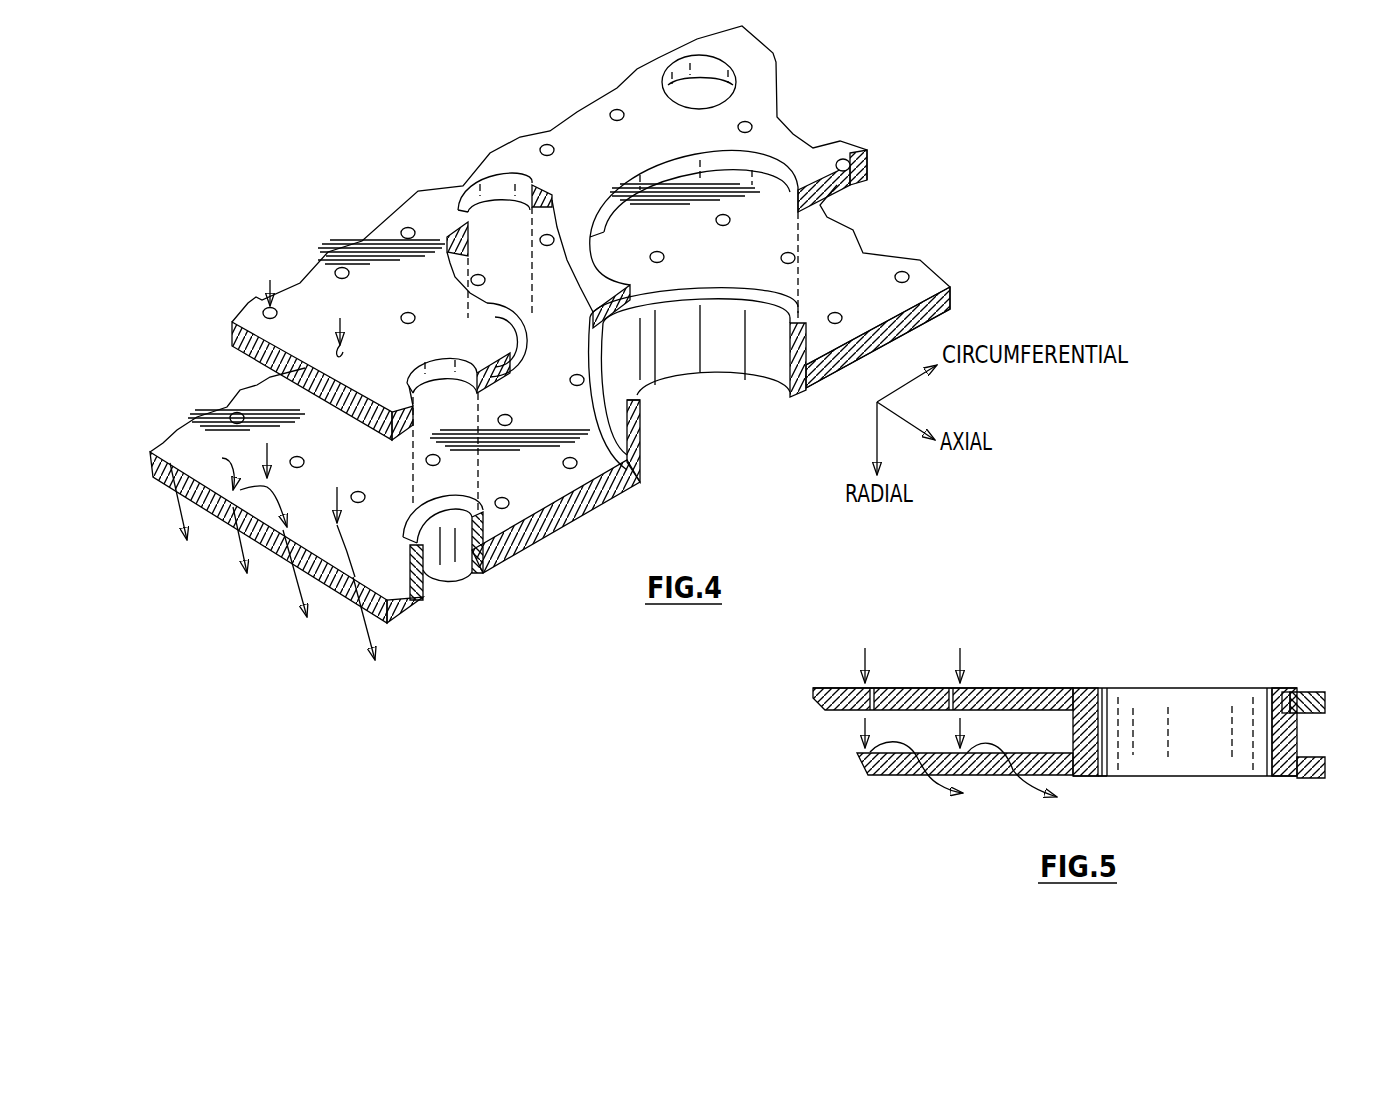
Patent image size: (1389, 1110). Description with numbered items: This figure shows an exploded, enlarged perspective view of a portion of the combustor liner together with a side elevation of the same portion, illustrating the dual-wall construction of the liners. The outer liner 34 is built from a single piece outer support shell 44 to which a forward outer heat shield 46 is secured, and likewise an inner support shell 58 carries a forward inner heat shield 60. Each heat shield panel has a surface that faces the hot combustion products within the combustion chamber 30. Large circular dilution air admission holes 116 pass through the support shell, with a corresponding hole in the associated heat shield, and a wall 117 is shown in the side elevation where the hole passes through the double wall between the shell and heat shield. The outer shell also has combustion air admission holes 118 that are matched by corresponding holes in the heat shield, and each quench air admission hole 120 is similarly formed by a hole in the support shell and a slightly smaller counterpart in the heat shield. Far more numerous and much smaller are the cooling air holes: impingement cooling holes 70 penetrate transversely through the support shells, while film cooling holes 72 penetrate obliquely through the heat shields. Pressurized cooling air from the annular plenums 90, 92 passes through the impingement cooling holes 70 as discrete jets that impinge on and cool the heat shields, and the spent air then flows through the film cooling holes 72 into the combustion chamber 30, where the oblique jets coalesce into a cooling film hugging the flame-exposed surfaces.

In FIG. 4, the combustion chamber 30 is at (648, 548).
In FIG. 5, the combustion chamber 30 is at (1103, 833).
In FIG. 5, the outer liner 34 is at (1022, 639).
In FIG. 4, the outer support shell 44 is at (378, 246).
In FIG. 5, the outer support shell 44 is at (1297, 690).
In FIG. 4, the forward outer heat shield 46 is at (245, 404).
In FIG. 5, the forward outer heat shield 46 is at (1303, 780).
In FIG. 5, the inner support shell 58 is at (1284, 732).
In FIG. 5, the forward inner heat shield 60 is at (965, 764).
In FIG. 4, the impingement cooling holes 70 is at (278, 313).
In FIG. 5, the impingement cooling holes 70 is at (967, 687).
In FIG. 4, the film cooling holes 72 is at (175, 458).
In FIG. 5, the film cooling holes 72 is at (1016, 775).
In FIG. 5, the annular plenum 90 is at (943, 668).
In FIG. 4, the annular plenum 92 is at (435, 131).
In FIG. 5, the annular plenum 92 is at (948, 645).
In FIG. 4, the dilution air admission holes 116 is at (668, 173).
In FIG. 5, the dilution air admission holes 116 is at (1232, 690).
In FIG. 5, the boss wall 117 is at (1078, 727).
In FIG. 4, the combustion air admission holes 118 is at (446, 372).
In FIG. 4, the quench air admission holes 120 is at (487, 193).